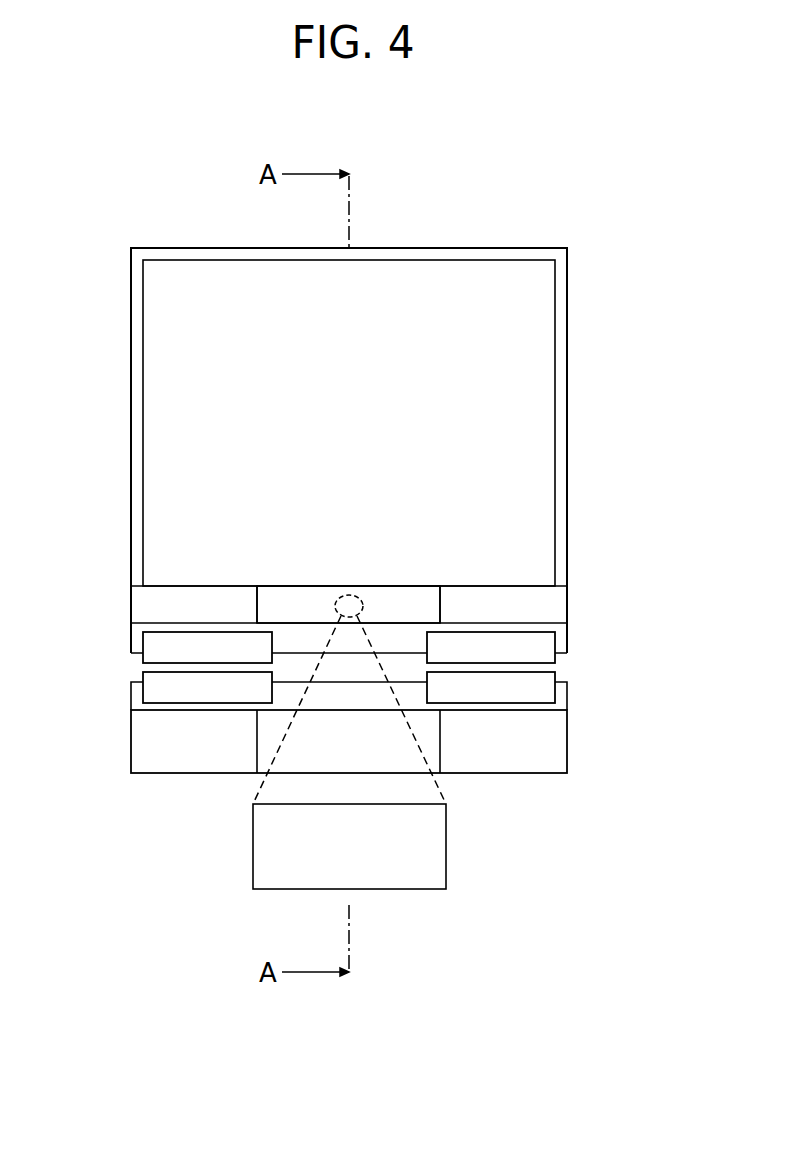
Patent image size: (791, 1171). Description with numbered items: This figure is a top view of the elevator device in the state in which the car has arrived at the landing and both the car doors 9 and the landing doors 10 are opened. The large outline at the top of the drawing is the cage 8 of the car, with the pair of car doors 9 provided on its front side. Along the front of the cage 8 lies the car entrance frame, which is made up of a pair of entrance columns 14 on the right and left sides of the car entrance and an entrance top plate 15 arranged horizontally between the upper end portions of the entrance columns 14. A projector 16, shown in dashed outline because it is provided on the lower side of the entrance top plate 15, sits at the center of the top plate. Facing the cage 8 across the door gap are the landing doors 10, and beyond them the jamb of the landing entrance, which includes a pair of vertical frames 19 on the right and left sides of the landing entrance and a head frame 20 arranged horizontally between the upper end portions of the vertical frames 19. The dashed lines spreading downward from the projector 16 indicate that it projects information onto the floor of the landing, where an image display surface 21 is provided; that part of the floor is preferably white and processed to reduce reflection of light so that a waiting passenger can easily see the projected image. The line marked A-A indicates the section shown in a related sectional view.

The cage 8 is at (534, 378).
The car doors 9 is at (148, 645).
The landing doors 10 is at (150, 695).
The entrance columns 14 is at (199, 601).
The entrance top plate 15 is at (284, 601).
The projector 16 is at (350, 601).
The vertical frames 19 is at (143, 750).
The head frame 20 is at (267, 747).
The image display surface 21 is at (432, 848).